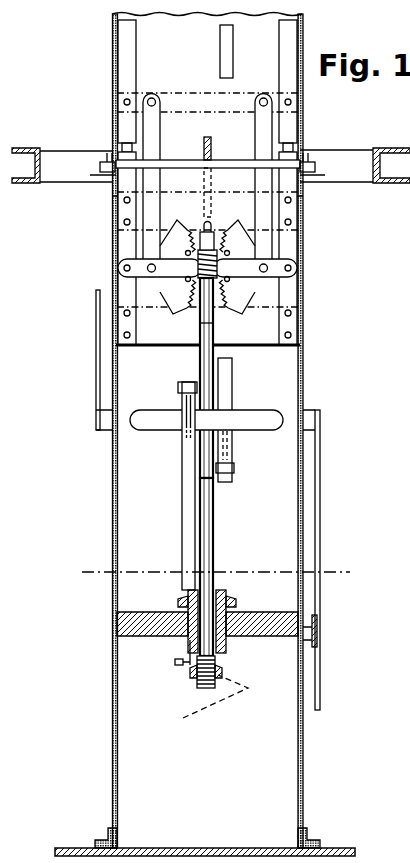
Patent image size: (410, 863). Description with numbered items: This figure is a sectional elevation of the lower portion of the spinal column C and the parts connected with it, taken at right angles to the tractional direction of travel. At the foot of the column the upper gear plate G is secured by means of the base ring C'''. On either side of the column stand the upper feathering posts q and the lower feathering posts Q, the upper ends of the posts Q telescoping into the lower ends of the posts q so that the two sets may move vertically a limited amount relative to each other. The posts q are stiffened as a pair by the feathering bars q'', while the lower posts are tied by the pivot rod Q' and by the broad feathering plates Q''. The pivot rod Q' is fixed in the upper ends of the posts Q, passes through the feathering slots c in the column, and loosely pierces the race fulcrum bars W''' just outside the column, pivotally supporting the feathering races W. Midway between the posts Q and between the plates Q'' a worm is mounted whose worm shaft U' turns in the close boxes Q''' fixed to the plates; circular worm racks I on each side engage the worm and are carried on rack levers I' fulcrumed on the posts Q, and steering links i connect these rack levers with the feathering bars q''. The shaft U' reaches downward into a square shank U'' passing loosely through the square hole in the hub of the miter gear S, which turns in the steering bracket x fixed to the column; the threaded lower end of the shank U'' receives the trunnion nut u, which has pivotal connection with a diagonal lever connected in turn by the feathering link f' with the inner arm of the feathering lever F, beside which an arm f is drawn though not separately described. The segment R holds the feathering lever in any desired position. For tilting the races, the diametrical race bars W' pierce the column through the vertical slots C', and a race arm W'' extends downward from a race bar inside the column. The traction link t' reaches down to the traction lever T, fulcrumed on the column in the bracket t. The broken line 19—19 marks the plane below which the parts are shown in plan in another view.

The casing C is at (207, 431).
The upper gear plate G is at (224, 855).
The base ring C''' is at (218, 823).
The upper feathering posts q is at (207, 86).
The feathering posts Q is at (207, 248).
The feathering slots c is at (116, 196).
The feathering bars q'' is at (207, 102).
The steering links i is at (207, 185).
The pivot rod Q' is at (208, 155).
The feathering plates Q'' is at (208, 268).
The circular worm racks I is at (207, 267).
The rack levers I' is at (207, 262).
The close boxes Q''' is at (201, 275).
The feathering races W is at (211, 155).
The race arm W'' is at (95, 161).
The race fulcrum bars W''' is at (325, 162).
The vertical slots C' is at (217, 146).
The diametrical race bars W' is at (222, 192).
The traction link t' is at (234, 253).
The worm shaft U' is at (197, 378).
The square shank U'' is at (217, 567).
The oval arm f is at (206, 432).
The bracket t is at (265, 436).
The feathering link f' is at (177, 486).
The feathering lever F is at (96, 310).
The traction lever T is at (320, 688).
The segment R is at (310, 642).
The broken line 19 is at (214, 575).
The miter gear S is at (207, 615).
The steering bracket x is at (254, 637).
The trunnion nut u is at (217, 667).